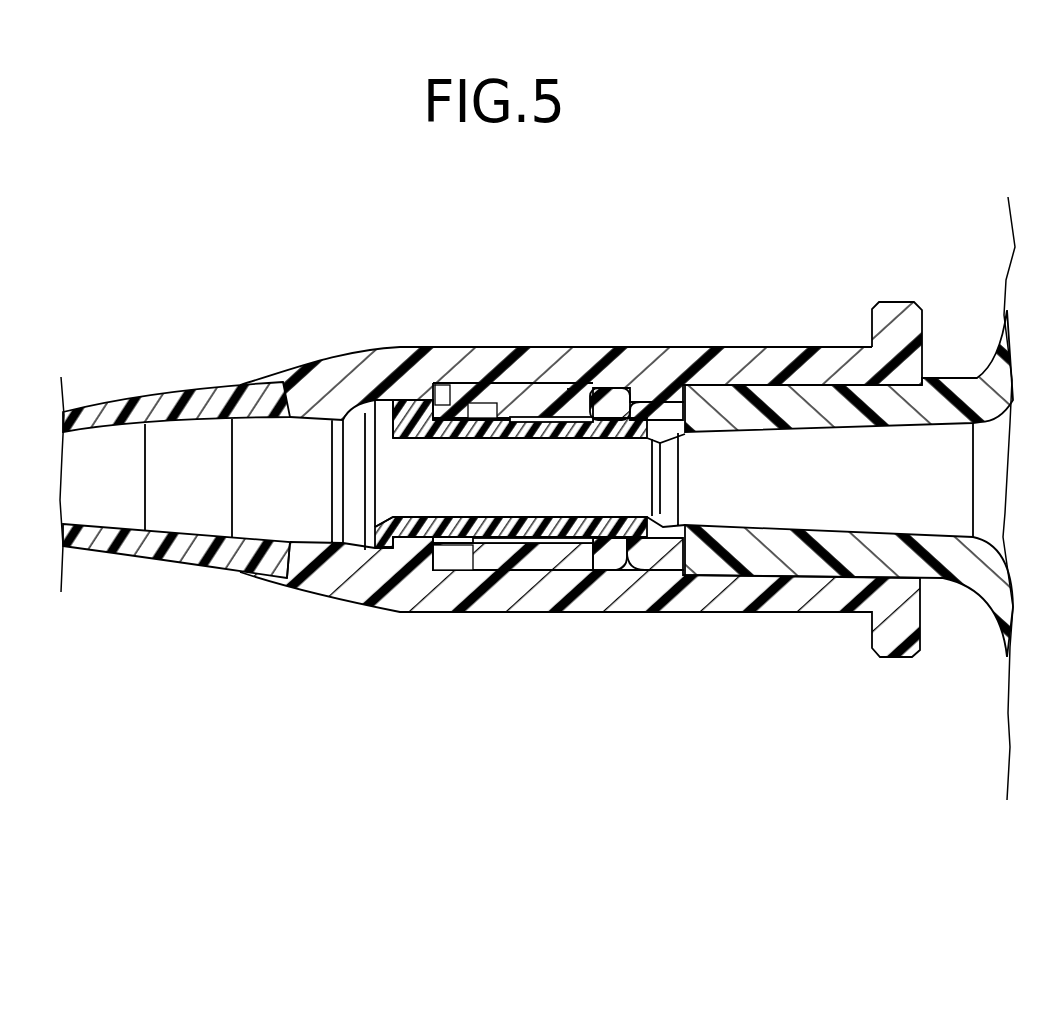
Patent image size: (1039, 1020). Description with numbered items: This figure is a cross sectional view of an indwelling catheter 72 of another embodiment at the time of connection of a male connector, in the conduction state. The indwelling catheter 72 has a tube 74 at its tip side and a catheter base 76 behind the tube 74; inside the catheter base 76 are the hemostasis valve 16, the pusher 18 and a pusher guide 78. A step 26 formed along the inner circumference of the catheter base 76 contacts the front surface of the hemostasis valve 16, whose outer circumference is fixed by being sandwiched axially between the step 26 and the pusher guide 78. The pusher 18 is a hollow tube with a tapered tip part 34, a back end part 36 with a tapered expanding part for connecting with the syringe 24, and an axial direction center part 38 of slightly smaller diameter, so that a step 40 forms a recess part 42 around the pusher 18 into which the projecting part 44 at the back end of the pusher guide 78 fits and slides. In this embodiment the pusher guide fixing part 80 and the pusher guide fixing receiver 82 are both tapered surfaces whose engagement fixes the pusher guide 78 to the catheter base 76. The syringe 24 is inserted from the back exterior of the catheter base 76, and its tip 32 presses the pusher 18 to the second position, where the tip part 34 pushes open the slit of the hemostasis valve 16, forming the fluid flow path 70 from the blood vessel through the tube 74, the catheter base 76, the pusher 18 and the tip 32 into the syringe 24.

The hemostasis valve 16 is at (460, 427).
The pusher 18 is at (657, 392).
The syringe 24 is at (945, 582).
The step 26 is at (433, 560).
The tip 32 is at (820, 560).
The tip part 34 is at (422, 436).
The back end part 36 is at (660, 540).
The axial direction center part 38 is at (552, 537).
The step 40 is at (507, 538).
The recess part 42 is at (523, 417).
The projecting part 44 is at (603, 543).
The fluid flow path 70 is at (682, 461).
The indwelling catheter 72 is at (857, 300).
The tube 74 is at (150, 408).
The catheter base 76 is at (301, 360).
The pusher guide 78 is at (522, 381).
The pusher guide fixing part 80 is at (568, 390).
The pusher guide fixing receiver 82 is at (582, 398).